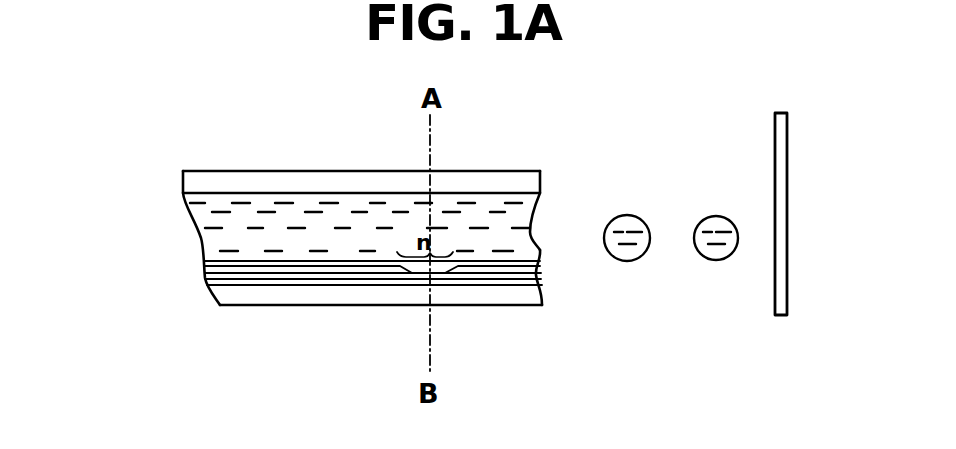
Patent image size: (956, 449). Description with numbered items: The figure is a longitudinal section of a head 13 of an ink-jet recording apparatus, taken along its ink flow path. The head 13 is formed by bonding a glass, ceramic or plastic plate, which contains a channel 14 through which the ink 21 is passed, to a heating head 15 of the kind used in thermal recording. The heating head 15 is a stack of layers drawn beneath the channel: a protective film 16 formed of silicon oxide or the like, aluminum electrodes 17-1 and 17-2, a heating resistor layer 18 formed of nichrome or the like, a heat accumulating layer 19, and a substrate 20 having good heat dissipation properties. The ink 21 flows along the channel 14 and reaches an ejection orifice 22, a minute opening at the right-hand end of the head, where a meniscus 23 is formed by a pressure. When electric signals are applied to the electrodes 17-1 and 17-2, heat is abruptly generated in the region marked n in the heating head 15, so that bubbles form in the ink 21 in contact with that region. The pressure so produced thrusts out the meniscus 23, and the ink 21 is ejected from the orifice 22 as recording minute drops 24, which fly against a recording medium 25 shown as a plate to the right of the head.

The head 13 is at (300, 171).
The channel 14 is at (368, 193).
The heating head 15 is at (358, 324).
The protective film 16 is at (233, 264).
The aluminum electrode 17-1 is at (285, 273).
The aluminum electrode 17-2 is at (510, 273).
The heating resistor layer 18 is at (347, 278).
The heat accumulating layer 19 is at (395, 285).
The substrate 20 is at (470, 300).
The ink 21 is at (217, 193).
The ejection orifice 22 is at (542, 250).
The meniscus 23 is at (531, 232).
The recording minute drops 24 is at (740, 198).
The recording medium 25 is at (775, 170).